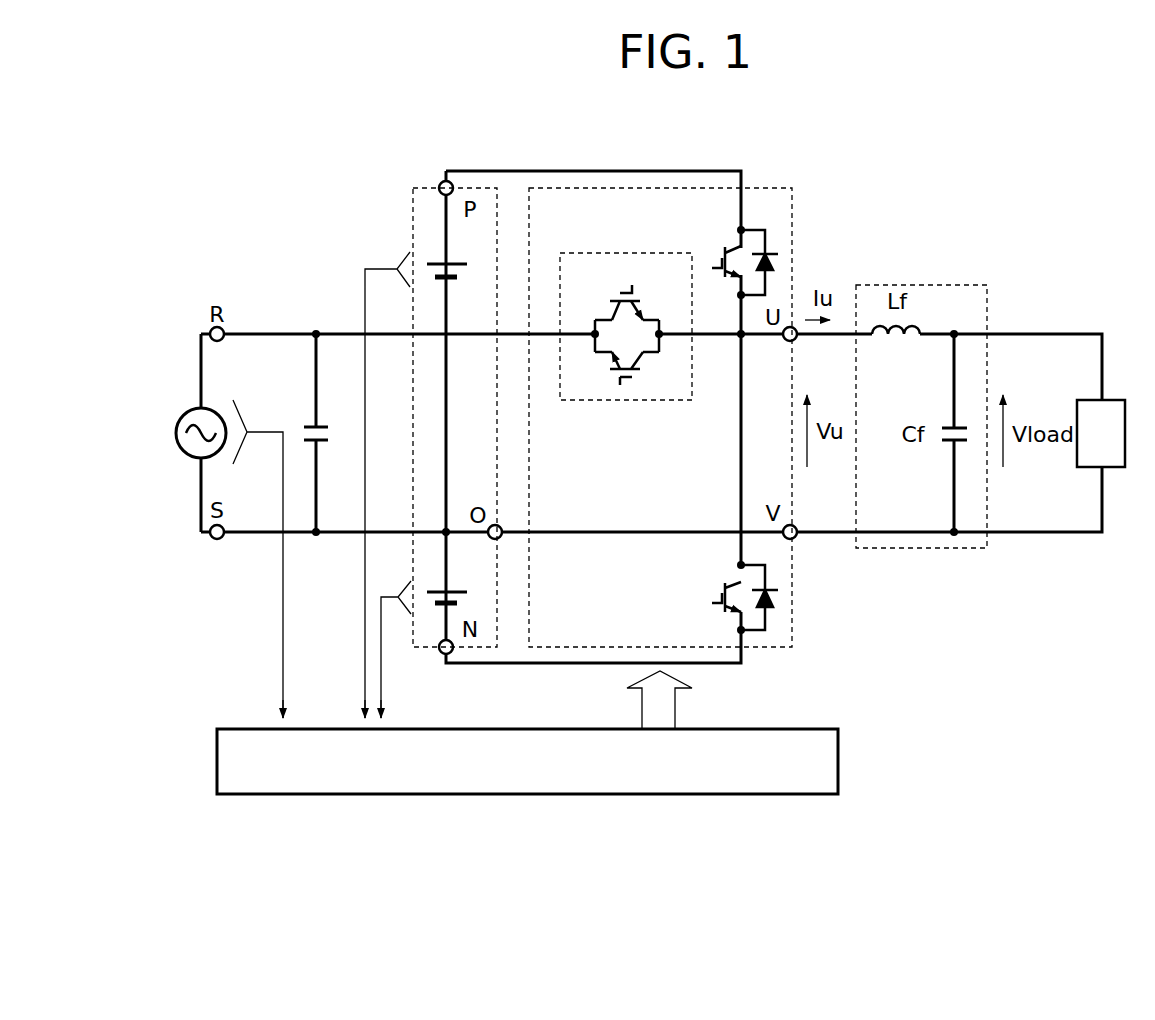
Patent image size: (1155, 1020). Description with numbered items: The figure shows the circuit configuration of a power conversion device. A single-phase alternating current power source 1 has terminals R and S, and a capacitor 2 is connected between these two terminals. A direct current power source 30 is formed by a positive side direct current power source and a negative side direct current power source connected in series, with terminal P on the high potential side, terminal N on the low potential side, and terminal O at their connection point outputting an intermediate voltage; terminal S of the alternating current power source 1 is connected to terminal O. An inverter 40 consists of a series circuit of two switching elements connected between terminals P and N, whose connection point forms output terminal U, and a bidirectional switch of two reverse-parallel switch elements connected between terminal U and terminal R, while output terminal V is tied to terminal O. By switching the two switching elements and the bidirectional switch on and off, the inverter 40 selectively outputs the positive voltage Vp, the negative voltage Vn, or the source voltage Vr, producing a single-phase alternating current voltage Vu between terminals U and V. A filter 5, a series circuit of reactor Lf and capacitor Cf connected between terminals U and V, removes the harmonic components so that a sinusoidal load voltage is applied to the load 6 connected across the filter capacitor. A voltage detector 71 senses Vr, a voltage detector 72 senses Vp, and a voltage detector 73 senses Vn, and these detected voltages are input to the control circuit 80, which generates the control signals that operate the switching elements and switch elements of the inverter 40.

The single-phase alternating current power source 1 is at (187, 410).
The capacitor 2 is at (308, 426).
The direct current power source 30 is at (413, 233).
The inverter 40 is at (792, 240).
The filter 5 is at (917, 286).
The load 6 is at (1111, 401).
The voltage detector 71 is at (240, 398).
The voltage detector 72 is at (394, 266).
The voltage detector 73 is at (397, 594).
The control circuit 80 is at (218, 728).